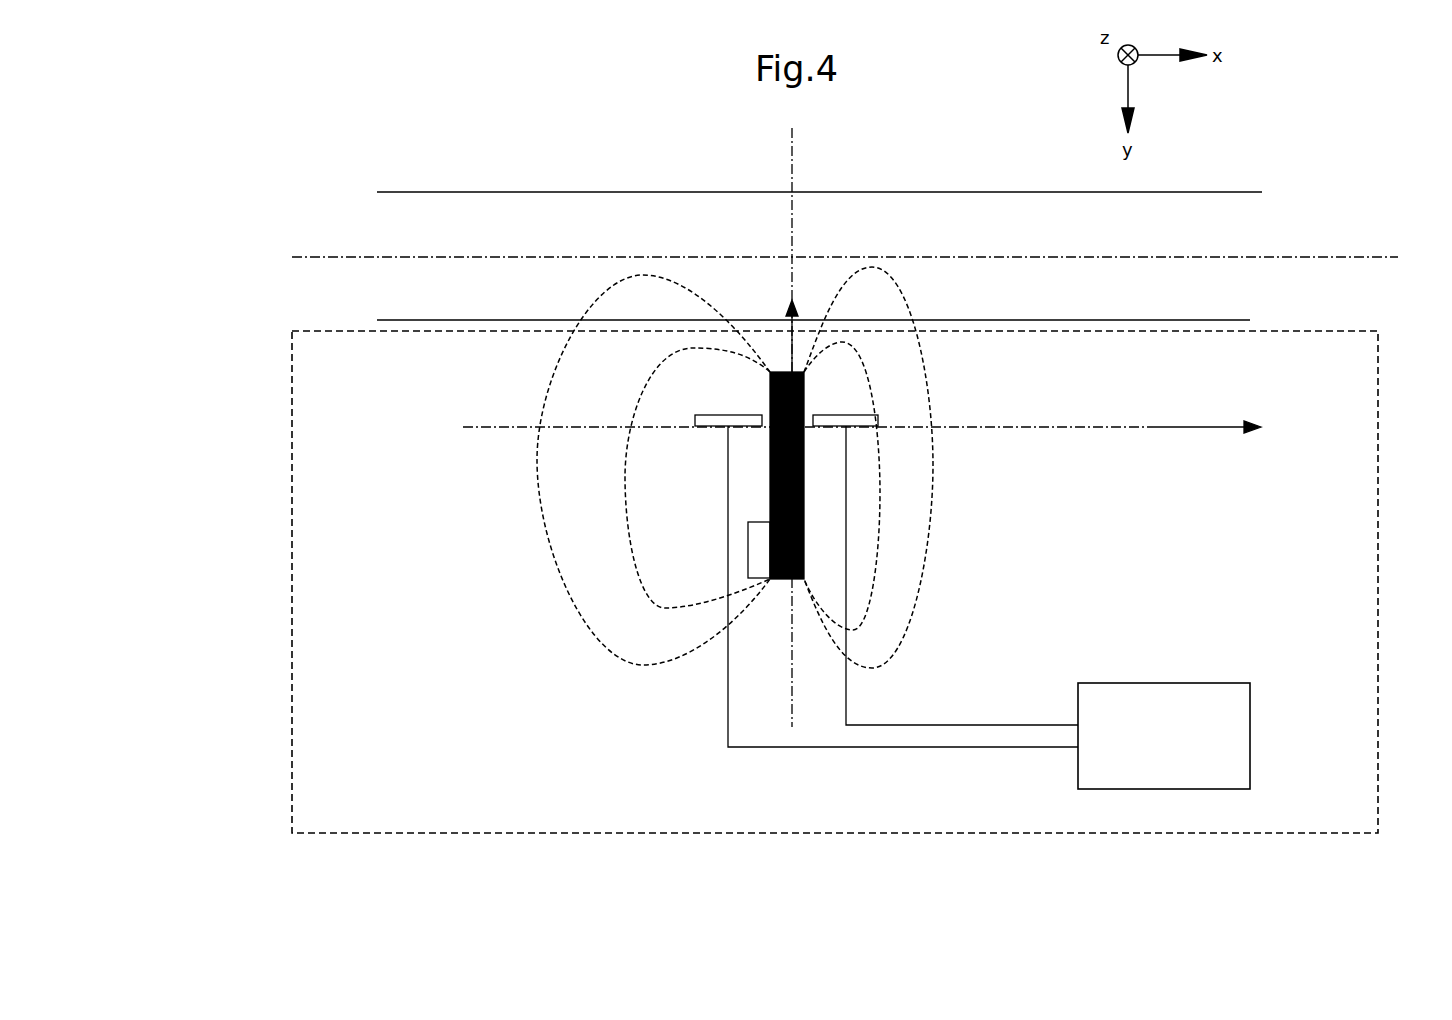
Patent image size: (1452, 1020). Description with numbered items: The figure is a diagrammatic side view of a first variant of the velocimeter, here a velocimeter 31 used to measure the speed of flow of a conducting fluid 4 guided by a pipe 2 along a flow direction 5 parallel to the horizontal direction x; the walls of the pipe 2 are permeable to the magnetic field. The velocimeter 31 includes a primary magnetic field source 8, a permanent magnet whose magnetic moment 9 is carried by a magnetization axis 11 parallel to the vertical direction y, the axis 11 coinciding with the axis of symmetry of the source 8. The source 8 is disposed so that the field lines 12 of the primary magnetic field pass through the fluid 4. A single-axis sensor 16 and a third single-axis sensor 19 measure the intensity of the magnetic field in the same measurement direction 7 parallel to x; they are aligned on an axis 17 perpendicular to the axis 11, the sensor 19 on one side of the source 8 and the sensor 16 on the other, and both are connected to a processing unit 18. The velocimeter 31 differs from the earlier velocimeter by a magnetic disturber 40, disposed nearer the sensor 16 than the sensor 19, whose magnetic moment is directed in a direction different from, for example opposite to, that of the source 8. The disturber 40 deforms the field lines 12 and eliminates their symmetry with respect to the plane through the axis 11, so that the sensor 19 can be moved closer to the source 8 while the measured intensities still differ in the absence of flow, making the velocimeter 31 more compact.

The pipe 2 is at (598, 192).
The conducting fluid 4 is at (490, 215).
The flow direction 5 is at (340, 257).
The measurement direction 7 is at (1258, 434).
The primary magnetic field source 8 is at (804, 402).
The magnetic moment 9 is at (790, 356).
The magnetization axis 11 is at (790, 700).
The field lines 12 is at (627, 530).
The single-axis sensor 16 is at (693, 422).
The axis 17 is at (1110, 427).
The processing unit 18 is at (1182, 754).
The third single-axis sensor 19 is at (878, 421).
The velocimeter 31 is at (290, 329).
The magnetic disturber 40 is at (748, 545).